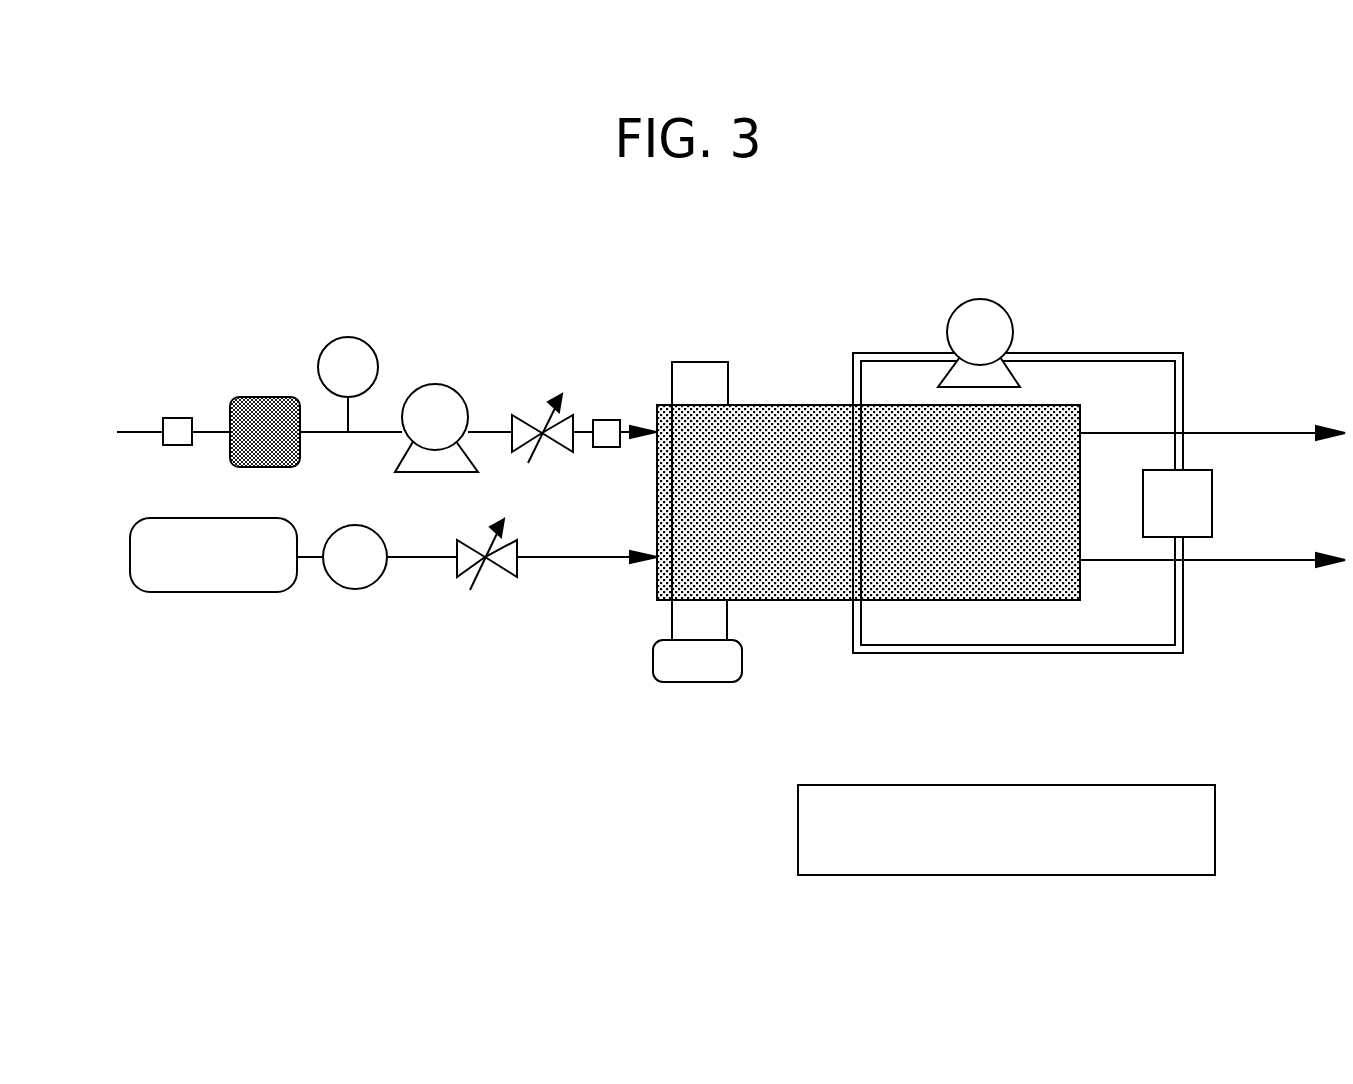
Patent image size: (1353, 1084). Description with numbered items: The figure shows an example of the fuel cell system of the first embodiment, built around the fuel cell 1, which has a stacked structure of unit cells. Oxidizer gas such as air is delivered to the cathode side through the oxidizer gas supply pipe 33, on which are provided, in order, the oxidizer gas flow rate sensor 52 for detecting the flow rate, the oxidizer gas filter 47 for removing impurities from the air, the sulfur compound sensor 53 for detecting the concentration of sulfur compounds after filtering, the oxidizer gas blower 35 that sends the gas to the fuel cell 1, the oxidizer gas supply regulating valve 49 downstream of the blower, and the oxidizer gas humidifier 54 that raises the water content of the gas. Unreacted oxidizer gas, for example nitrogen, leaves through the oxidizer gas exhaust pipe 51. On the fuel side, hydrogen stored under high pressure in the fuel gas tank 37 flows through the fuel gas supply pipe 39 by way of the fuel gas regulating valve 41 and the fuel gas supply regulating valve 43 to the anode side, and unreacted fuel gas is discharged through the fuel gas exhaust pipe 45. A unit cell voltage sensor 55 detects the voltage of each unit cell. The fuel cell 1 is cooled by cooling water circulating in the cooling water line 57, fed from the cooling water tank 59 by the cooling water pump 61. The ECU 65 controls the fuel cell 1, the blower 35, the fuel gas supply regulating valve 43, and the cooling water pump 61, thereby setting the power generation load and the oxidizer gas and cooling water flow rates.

The fuel cell 1 is at (792, 405).
The oxidizer gas supply pipe 33 is at (130, 433).
The oxidizer gas blower 35 is at (438, 383).
The fuel gas tank 37 is at (217, 593).
The fuel gas supply pipe 39 is at (596, 557).
The fuel gas regulating valve 41 is at (356, 590).
The fuel gas supply regulating valve 43 is at (490, 578).
The fuel gas exhaust pipe 45 is at (1265, 562).
The oxidizer gas filter 47 is at (245, 397).
The oxidizer gas supply regulating valve 49 is at (533, 415).
The oxidizer gas exhaust pipe 51 is at (1273, 433).
The oxidizer gas flow rate sensor 52 is at (176, 446).
The sulfur compound sensor 53 is at (330, 342).
The oxidizer gas humidifier 54 is at (607, 420).
The unit cell voltage sensor 55 is at (712, 682).
The cooling water line 57 is at (1138, 353).
The cooling water tank 59 is at (1212, 500).
The cooling water pump 61 is at (980, 300).
The ECU 65 is at (830, 785).